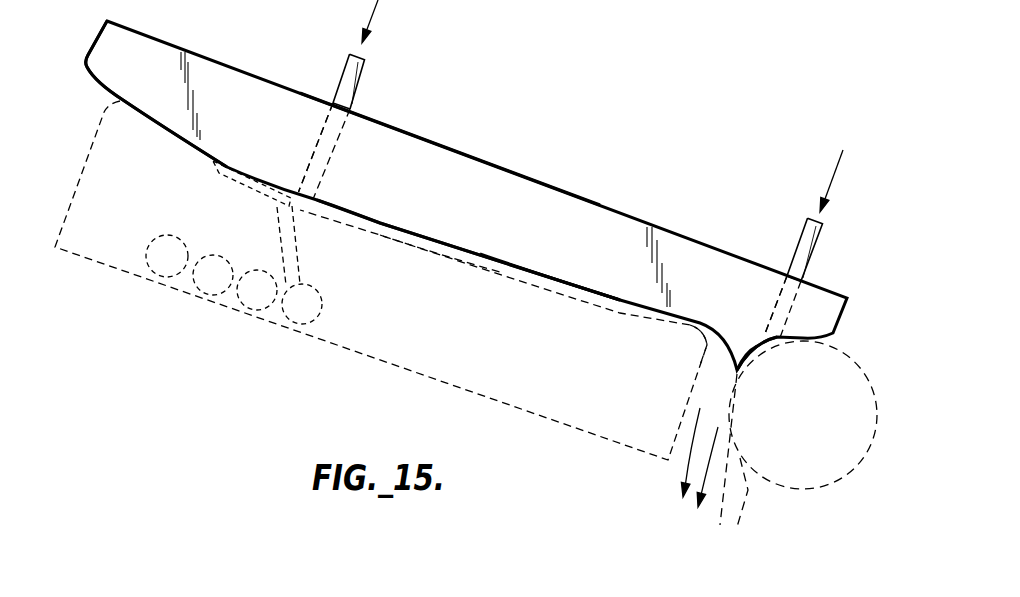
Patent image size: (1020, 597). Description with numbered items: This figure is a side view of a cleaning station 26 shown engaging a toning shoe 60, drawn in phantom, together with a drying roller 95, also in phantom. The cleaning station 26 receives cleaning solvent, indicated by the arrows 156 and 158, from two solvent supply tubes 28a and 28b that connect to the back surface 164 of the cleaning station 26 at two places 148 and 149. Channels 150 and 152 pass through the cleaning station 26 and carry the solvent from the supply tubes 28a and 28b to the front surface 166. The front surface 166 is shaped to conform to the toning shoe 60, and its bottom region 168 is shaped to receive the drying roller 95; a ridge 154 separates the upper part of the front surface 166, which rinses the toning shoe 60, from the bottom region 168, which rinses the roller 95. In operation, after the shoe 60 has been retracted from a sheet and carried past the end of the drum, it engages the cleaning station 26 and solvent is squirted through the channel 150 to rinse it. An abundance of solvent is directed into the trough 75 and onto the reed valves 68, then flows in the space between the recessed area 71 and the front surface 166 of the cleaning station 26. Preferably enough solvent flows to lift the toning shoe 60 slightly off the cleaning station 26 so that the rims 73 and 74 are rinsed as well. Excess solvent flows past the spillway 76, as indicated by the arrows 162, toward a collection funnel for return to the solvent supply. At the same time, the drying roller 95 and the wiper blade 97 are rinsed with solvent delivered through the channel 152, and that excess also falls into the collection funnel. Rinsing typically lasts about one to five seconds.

The cleaning station 26 is at (545, 190).
The solvent supply tube 28a is at (372, 69).
The solvent supply tube 28b is at (820, 238).
The toning shoe 60 is at (150, 278).
The reed valves 68 is at (243, 185).
The recessed area 71 is at (438, 260).
The rim 73 is at (518, 275).
The rim 74 is at (168, 133).
The trough 75 is at (318, 219).
The spillway 76 is at (705, 353).
The drying roller 95 is at (870, 380).
The wiper blade 97 is at (748, 497).
The connection place 148 is at (333, 102).
The connection place 149 is at (790, 273).
The channel 150 is at (313, 140).
The channel 152 is at (780, 303).
The ridge 154 is at (757, 360).
The arrow indicating cleaning solvent 156 is at (378, 3).
The arrow indicating cleaning solvent 158 is at (843, 152).
The arrows indicating excess solvent flow 162 is at (703, 460).
The back surface 164 is at (445, 147).
The front surface 166 is at (430, 242).
The bottom region 168 is at (760, 330).